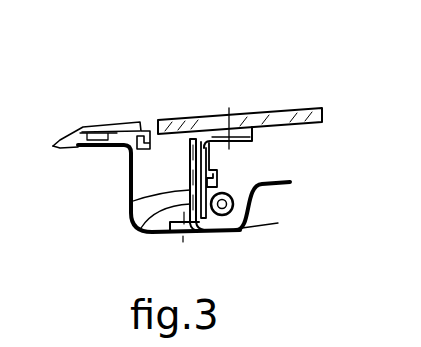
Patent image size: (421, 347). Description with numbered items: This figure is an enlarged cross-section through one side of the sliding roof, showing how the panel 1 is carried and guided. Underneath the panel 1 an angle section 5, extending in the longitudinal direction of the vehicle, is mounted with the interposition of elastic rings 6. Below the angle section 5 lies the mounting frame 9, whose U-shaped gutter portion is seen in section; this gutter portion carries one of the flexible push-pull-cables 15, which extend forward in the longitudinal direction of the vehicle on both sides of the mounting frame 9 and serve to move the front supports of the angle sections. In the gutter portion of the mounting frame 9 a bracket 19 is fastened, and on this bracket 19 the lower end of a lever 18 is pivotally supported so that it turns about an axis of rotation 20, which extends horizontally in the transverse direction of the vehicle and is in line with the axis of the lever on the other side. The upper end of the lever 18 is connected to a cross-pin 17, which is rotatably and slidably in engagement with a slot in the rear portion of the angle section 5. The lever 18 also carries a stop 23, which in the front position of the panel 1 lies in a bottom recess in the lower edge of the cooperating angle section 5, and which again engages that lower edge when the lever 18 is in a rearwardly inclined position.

The panel 1 is at (268, 117).
The angle section 5 is at (204, 147).
The elastic rings 6 is at (244, 131).
The mounting frame 9 is at (117, 186).
The push-pull-cables 15 is at (247, 201).
The cross-pin 17 is at (262, 153).
The lever 18 is at (130, 202).
The bracket 19 is at (203, 233).
The axes of rotation 20 is at (141, 228).
The stop 23 is at (216, 176).